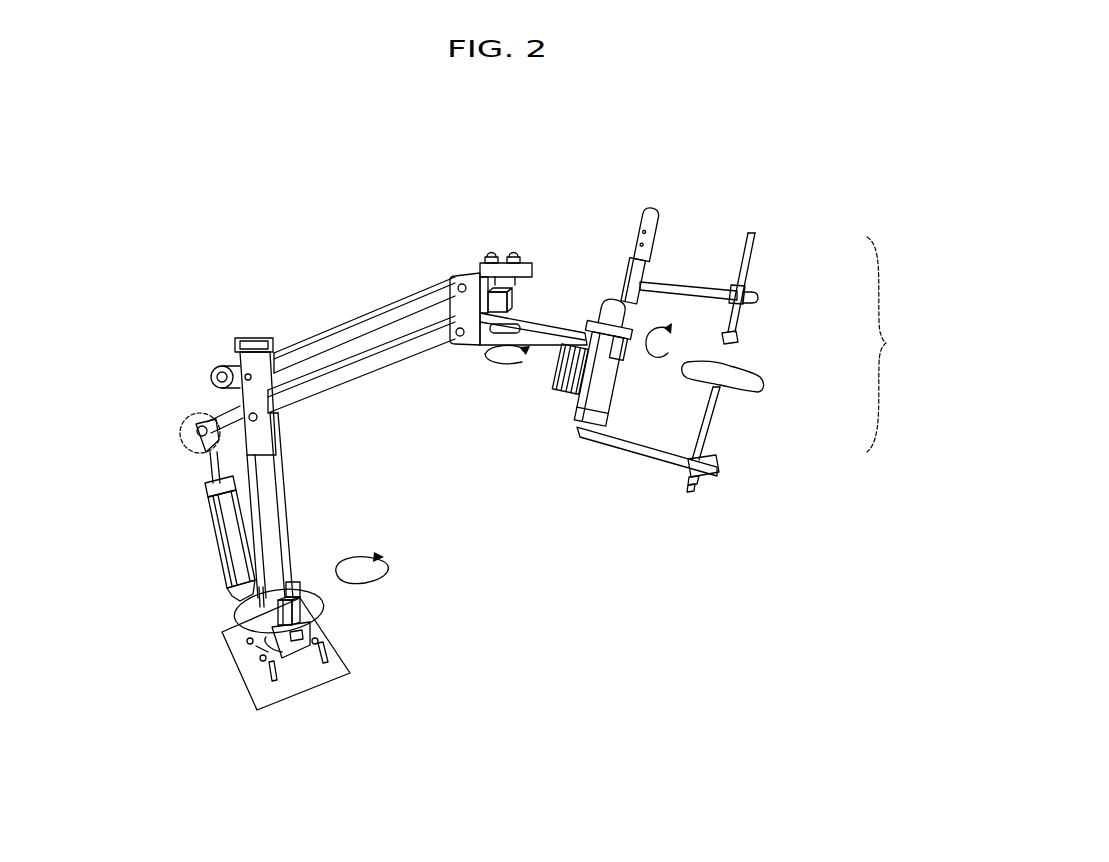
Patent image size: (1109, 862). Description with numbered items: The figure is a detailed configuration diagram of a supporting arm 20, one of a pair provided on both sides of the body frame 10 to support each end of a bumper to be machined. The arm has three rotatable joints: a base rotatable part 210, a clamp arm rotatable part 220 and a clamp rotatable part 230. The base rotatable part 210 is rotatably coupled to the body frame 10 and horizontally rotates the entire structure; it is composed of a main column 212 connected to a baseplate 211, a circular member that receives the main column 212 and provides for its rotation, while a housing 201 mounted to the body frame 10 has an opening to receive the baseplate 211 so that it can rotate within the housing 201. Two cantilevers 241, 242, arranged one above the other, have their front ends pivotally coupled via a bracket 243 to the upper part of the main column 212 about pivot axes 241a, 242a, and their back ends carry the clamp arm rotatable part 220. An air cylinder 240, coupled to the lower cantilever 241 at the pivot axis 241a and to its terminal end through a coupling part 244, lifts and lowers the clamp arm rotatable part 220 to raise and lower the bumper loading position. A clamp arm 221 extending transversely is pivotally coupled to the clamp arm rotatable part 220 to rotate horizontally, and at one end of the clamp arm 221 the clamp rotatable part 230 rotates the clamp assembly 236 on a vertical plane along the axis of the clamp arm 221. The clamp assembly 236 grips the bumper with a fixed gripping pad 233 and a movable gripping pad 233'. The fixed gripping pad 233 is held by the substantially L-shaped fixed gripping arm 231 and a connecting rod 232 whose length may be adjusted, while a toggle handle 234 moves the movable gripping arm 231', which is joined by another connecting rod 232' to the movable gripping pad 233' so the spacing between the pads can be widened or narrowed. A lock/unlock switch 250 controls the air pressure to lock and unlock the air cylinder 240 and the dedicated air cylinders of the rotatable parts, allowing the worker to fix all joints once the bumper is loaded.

The body frame 10 is at (300, 678).
The supporting arm 20 is at (790, 170).
The housing 201 is at (272, 675).
The base rotatable part 210 is at (236, 602).
The baseplate 211 is at (312, 608).
The main column 212 is at (262, 565).
The clamp arm rotatable part 220 is at (487, 352).
The clamp arm 221 is at (533, 330).
The clamp rotatable part 230 is at (606, 318).
The fixed gripping arm 231 is at (717, 451).
The movable gripping arm 231' is at (750, 263).
The connecting rod 232 is at (772, 439).
The connecting rod 232' is at (791, 288).
The fixed gripping pad 233 is at (769, 376).
The movable gripping pad 233' is at (802, 321).
The toggle handle 234 is at (660, 207).
The clamp assembly 236 is at (894, 344).
The air cylinder 240 is at (218, 517).
The cantilever 241 is at (300, 368).
The pivot axis 241a is at (257, 423).
The cantilever 242 is at (355, 322).
The pivot axis 242a is at (226, 362).
The bracket 243 is at (240, 402).
The coupling part 244 is at (183, 430).
The lock/unlock switch 250 is at (513, 255).